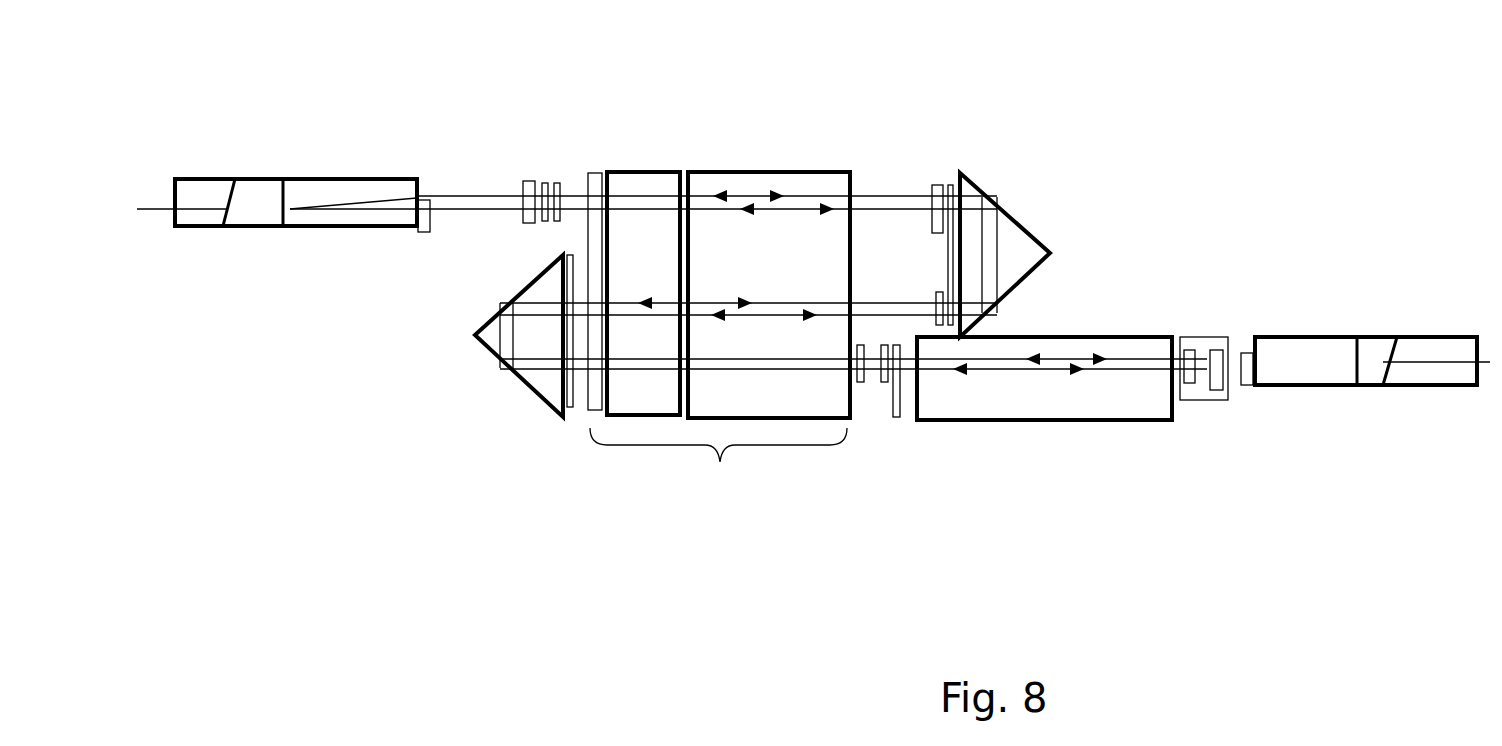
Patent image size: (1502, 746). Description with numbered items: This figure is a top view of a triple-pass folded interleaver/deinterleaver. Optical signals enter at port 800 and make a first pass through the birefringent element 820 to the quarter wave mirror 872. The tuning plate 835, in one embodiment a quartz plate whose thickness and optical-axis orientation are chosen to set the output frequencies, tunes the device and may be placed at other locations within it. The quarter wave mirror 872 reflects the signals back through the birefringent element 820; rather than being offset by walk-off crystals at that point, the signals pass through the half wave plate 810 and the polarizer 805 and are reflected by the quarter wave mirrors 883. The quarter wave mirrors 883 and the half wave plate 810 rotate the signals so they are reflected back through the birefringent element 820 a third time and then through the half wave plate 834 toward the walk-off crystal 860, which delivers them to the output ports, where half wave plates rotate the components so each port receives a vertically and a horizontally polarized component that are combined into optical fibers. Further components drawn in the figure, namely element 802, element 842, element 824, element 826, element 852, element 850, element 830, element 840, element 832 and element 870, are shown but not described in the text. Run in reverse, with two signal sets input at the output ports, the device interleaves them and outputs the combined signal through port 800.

The port 800 is at (352, 175).
The input plate 802 is at (418, 233).
The quarter wave mirrors 883 is at (520, 218).
The polarizer 805 is at (545, 179).
The half wave plate 810 is at (558, 179).
The plate 842 is at (571, 412).
The birefringent crystal 824 is at (643, 170).
The birefringent crystal 826 is at (765, 170).
The birefringent element 820 is at (720, 463).
The prism 852 is at (517, 395).
The prism 850 is at (1030, 213).
The plate 830 is at (935, 182).
The plate 840 is at (952, 180).
The plate 832 is at (940, 290).
The tuning plate 835 is at (858, 393).
The half wave plate 834 is at (883, 393).
The walk-off crystal 860 is at (1046, 421).
The plate 870 is at (1190, 338).
The quarter wave mirror 872 is at (1215, 338).